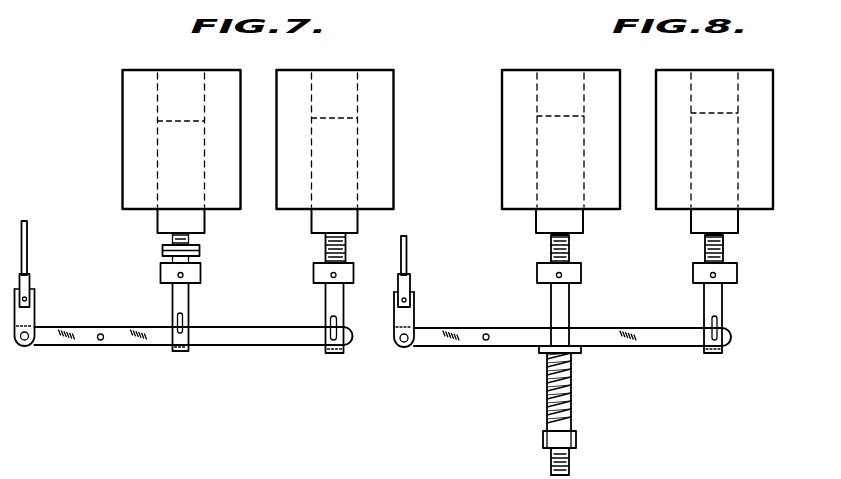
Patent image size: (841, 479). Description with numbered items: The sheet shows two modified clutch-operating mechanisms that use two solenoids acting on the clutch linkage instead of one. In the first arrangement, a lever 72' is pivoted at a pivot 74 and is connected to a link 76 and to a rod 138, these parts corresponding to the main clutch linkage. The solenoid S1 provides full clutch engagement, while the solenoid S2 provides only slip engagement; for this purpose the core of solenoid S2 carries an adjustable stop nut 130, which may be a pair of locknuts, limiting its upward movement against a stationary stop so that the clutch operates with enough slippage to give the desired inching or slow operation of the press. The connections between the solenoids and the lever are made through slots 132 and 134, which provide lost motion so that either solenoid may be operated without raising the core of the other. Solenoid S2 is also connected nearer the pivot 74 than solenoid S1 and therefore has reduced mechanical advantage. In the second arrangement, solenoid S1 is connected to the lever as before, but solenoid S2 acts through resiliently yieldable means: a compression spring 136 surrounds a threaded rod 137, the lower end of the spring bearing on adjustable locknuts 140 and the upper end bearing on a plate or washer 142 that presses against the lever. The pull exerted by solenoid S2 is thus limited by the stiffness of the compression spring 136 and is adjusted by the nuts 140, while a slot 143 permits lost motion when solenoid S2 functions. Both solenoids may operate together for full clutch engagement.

In FIG. 7, the solenoid S1 is at (393, 152).
In FIG. 8, the solenoid S1 is at (773, 107).
In FIG. 7, the solenoid S2 is at (122, 152).
In FIG. 8, the solenoid S2 is at (502, 107).
In FIG. 7, the pivot 74 is at (97, 338).
In FIG. 8, the pivot 74 is at (490, 331).
In FIG. 7, the link 76 is at (34, 318).
In FIG. 8, the link 76 is at (413, 313).
In FIG. 7, the actuating rod 138 is at (27, 240).
In FIG. 8, the actuating rod 138 is at (407, 255).
In FIG. 7, the adjustable stop nut 130 is at (199, 247).
In FIG. 7, the slot 132 is at (330, 318).
In FIG. 7, the slot 134 is at (185, 320).
In FIG. 7, the lever 72' is at (164, 366).
In FIG. 8, the compression spring 136 is at (573, 378).
In FIG. 8, the threaded rod 137 is at (571, 458).
In FIG. 8, the adjustable locknuts 140 is at (578, 436).
In FIG. 8, the plate or washer 142 is at (582, 348).
In FIG. 8, the slot 143 is at (720, 322).